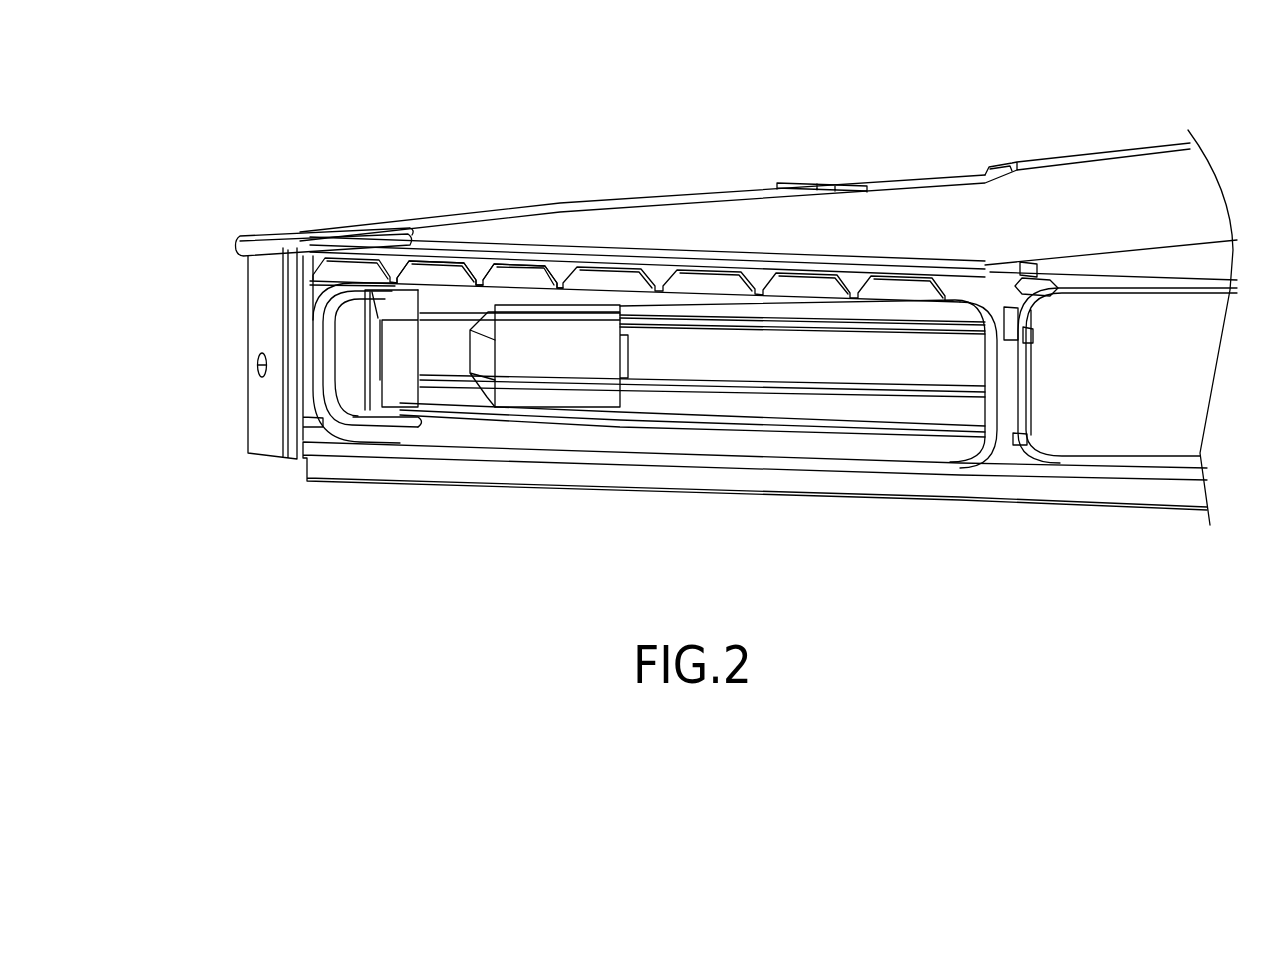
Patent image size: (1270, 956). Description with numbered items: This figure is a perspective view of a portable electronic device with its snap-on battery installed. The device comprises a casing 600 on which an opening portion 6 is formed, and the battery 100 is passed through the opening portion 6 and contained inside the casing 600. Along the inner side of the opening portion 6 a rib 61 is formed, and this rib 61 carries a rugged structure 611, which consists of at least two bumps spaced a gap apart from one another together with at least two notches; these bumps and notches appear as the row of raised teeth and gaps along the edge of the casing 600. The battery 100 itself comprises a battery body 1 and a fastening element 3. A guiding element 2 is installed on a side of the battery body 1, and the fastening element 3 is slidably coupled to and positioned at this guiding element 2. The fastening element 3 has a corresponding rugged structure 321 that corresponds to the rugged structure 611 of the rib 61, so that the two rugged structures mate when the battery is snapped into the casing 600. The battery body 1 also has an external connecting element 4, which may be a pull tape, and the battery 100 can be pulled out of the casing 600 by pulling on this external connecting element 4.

The casing 600 is at (1062, 185).
The opening portion 6 is at (355, 302).
The rib 61 is at (710, 300).
The rugged structure 611 is at (498, 287).
The battery body 1 is at (808, 320).
The battery 100 is at (818, 408).
The guiding element 2 is at (368, 333).
The fastening element 3 is at (390, 385).
The corresponding rugged structure 321 is at (497, 292).
The external connecting element 4 is at (580, 390).